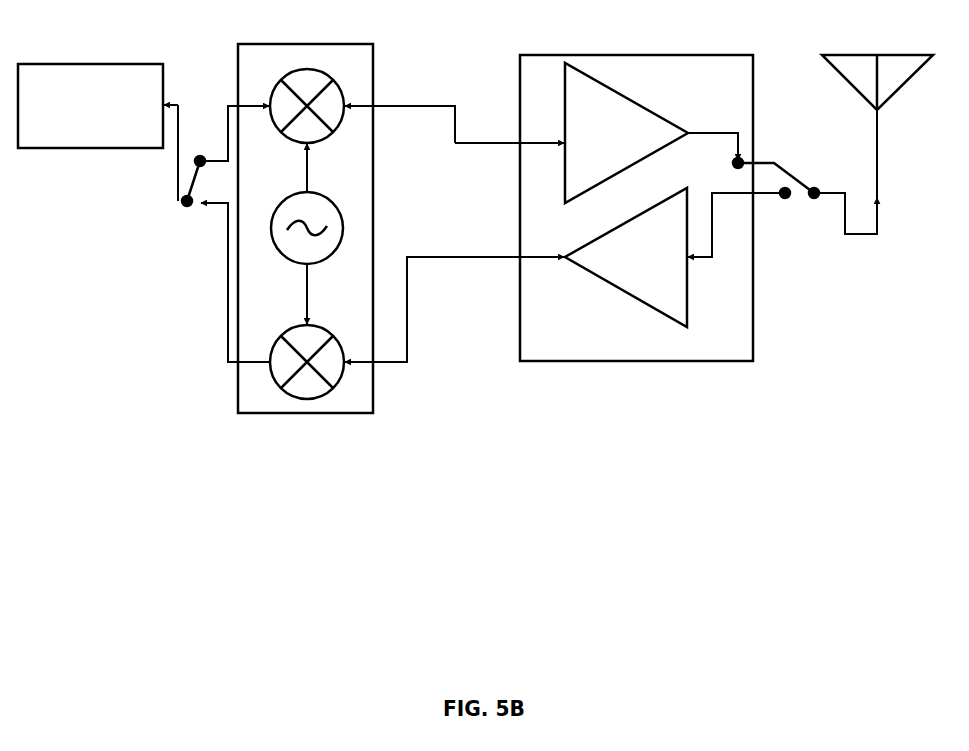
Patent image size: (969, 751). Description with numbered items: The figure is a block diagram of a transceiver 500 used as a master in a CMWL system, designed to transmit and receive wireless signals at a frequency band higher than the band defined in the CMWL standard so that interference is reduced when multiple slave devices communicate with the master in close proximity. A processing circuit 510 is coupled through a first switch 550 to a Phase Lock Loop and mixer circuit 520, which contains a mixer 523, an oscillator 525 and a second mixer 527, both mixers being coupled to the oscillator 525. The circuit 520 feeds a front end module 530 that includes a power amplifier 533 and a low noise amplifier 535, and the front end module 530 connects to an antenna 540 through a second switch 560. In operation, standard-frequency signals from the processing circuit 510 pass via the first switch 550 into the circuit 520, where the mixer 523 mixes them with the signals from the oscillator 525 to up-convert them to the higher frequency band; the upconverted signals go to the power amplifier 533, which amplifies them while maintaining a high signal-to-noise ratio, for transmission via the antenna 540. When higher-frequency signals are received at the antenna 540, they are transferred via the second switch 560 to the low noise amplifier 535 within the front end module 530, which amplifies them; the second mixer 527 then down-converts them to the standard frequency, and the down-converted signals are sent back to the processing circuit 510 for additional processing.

The transceiver 500 is at (770, 475).
The processing circuit 510 is at (90, 149).
The Phase Lock Loop (PLL) and mixer circuit 520 is at (335, 420).
The mixer 523 is at (298, 77).
The oscillator 525 is at (344, 217).
The second mixer 527 is at (298, 388).
The front end module (FEM) 530 is at (563, 362).
The power amplifier (PA) 533 is at (592, 82).
The low noise amplifier (LNA) 535 is at (656, 313).
The antenna 540 is at (855, 70).
The first switch 550 is at (192, 213).
The second switch 560 is at (791, 210).